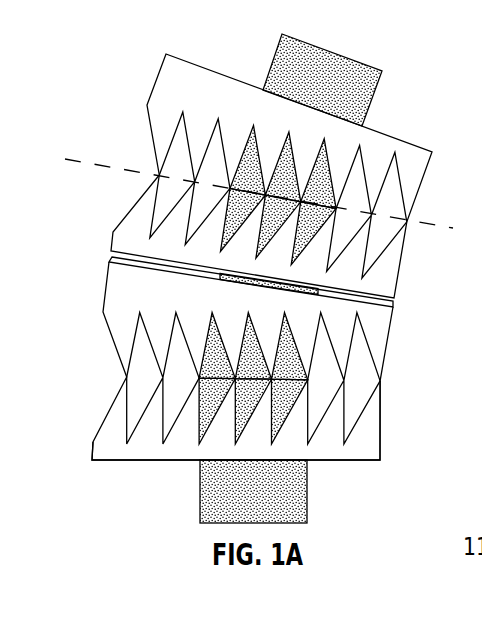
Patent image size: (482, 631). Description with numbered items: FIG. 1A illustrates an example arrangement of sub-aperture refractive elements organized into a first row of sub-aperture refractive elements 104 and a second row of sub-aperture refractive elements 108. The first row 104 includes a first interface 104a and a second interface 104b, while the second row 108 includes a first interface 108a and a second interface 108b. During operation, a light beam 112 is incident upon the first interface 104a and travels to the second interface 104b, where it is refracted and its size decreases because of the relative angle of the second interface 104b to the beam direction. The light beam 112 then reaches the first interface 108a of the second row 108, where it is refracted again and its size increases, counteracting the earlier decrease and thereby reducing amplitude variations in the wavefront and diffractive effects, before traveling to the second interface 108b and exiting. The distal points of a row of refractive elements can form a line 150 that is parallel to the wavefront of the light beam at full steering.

The first row of sub-aperture refractive elements 104 is at (102, 420).
The first interface 104a is at (380, 455).
The second interface 104b is at (369, 400).
The second row of sub-aperture refractive elements 108 is at (107, 283).
The first interface 108a is at (371, 350).
The second interface 108b is at (392, 310).
The light beam 112 is at (307, 493).
The line 150 is at (88, 162).